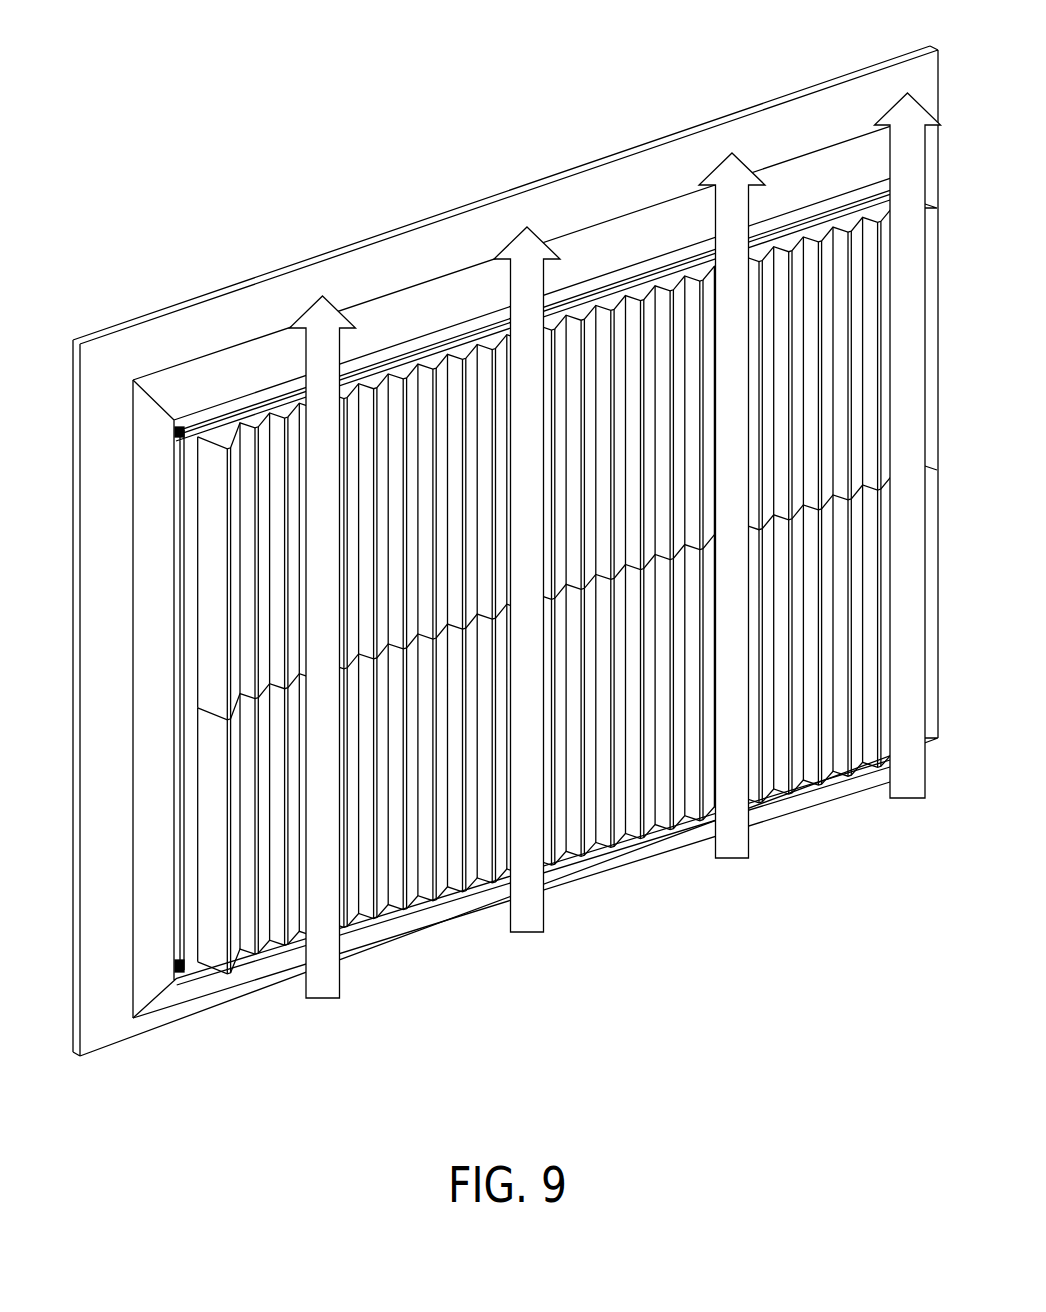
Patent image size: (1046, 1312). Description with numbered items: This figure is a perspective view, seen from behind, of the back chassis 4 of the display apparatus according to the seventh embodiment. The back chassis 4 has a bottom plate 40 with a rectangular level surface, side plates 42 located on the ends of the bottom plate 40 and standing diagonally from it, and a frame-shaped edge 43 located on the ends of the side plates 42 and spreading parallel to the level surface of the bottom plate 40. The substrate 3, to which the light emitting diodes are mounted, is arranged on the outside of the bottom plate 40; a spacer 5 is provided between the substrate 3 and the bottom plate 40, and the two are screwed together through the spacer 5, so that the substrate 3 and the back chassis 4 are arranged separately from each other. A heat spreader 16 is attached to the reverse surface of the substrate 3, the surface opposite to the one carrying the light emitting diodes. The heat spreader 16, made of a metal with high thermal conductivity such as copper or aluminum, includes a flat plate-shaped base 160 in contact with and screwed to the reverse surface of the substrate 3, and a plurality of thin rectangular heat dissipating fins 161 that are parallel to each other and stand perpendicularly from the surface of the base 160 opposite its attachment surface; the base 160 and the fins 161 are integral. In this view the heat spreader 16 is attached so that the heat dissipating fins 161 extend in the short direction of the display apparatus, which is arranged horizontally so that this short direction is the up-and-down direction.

The substrate 3 is at (505, 537).
The back chassis 4 is at (505, 551).
The bottom plate 40 is at (220, 407).
The side plates 42 is at (222, 368).
The frame-shaped edge 43 is at (253, 297).
The spacer 5 is at (170, 425).
The heat spreader 16 is at (534, 496).
The base 160 is at (580, 310).
The heat dissipating fins 161 is at (665, 268).